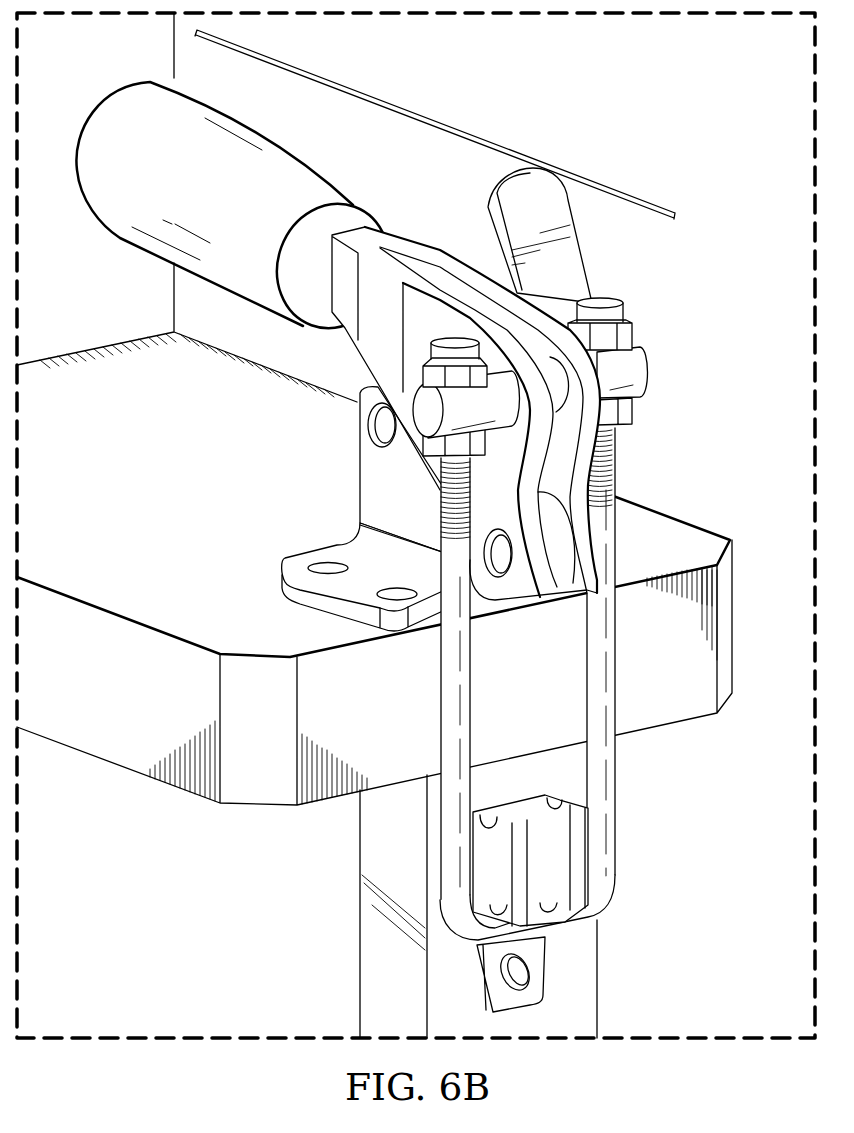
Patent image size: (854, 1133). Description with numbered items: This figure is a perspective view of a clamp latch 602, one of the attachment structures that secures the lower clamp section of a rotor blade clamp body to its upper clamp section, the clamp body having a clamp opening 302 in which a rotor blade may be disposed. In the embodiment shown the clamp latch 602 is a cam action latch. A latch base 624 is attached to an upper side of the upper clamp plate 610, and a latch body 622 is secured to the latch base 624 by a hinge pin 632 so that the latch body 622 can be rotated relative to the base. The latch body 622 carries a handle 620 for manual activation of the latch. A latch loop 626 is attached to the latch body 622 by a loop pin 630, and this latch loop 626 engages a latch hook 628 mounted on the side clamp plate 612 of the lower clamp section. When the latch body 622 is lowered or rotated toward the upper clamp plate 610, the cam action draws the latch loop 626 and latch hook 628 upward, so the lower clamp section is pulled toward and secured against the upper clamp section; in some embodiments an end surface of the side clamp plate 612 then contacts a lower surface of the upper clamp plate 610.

The clamp opening 302 is at (142, 932).
The clamp latch 602 is at (431, 121).
The upper clamp plate 610 is at (110, 763).
The side clamp plate 612 is at (370, 957).
The handle 620 is at (120, 240).
The latch body 622 is at (466, 433).
The latch base 624 is at (370, 485).
The latch loop 626 is at (617, 665).
The latch hook 628 is at (592, 847).
The loop pin 630 is at (648, 362).
The hinge pin 632 is at (499, 566).